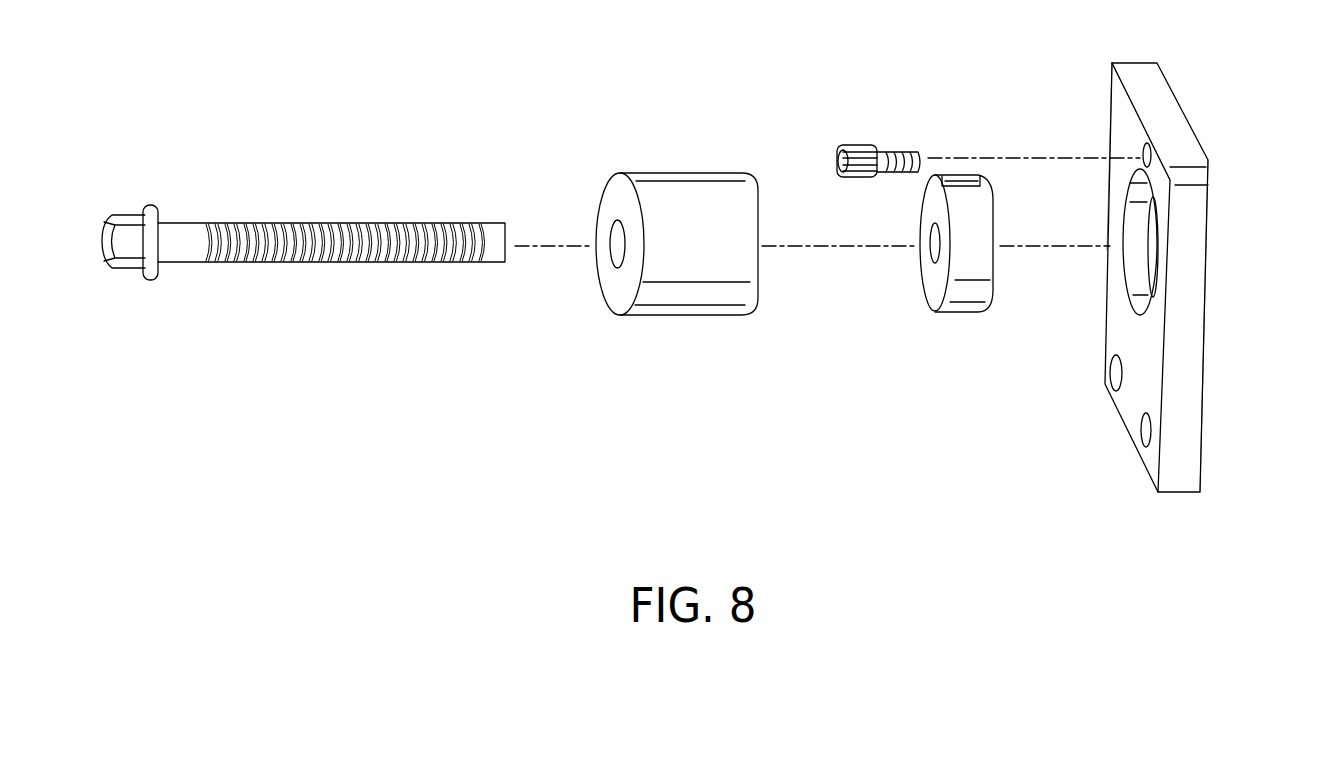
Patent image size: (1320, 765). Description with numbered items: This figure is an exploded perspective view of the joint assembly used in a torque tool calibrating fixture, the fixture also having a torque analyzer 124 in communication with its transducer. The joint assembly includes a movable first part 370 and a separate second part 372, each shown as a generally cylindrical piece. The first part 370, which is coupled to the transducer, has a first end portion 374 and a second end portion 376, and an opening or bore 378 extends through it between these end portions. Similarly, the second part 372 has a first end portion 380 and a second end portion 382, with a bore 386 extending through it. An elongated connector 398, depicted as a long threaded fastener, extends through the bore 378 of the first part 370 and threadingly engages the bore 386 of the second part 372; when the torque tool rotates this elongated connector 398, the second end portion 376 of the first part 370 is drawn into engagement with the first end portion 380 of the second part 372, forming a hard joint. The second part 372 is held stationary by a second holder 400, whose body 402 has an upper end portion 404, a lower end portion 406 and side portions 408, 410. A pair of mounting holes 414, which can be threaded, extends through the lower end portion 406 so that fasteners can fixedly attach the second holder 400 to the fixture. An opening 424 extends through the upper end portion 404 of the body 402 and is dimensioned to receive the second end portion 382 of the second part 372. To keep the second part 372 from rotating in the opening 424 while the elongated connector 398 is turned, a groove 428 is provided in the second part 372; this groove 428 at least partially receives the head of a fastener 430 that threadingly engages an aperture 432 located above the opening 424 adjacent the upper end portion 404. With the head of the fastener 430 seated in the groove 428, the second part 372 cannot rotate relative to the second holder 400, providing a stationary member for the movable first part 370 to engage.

The torque analyzer 124 is at (666, 101).
The first part 370 is at (665, 268).
The second part 372 is at (960, 254).
The first end portion 374 is at (614, 300).
The second end portion 376 is at (757, 205).
The bore 378 is at (612, 238).
The first end portion 380 is at (930, 292).
The second end portion 382 is at (996, 222).
The bore 386 is at (930, 258).
The elongated connector 398 is at (287, 300).
The second holder 400 is at (1168, 262).
The body 402 is at (1160, 346).
The upper end portion 404 is at (1140, 128).
The lower end portion 406 is at (1123, 414).
The side portion 408 is at (1198, 421).
The side portion 410 is at (1104, 125).
The mounting holes 414 is at (1110, 384).
The opening 424 is at (1160, 256).
The groove 428 is at (945, 173).
The fastener 430 is at (855, 143).
The aperture 432 is at (1151, 156).